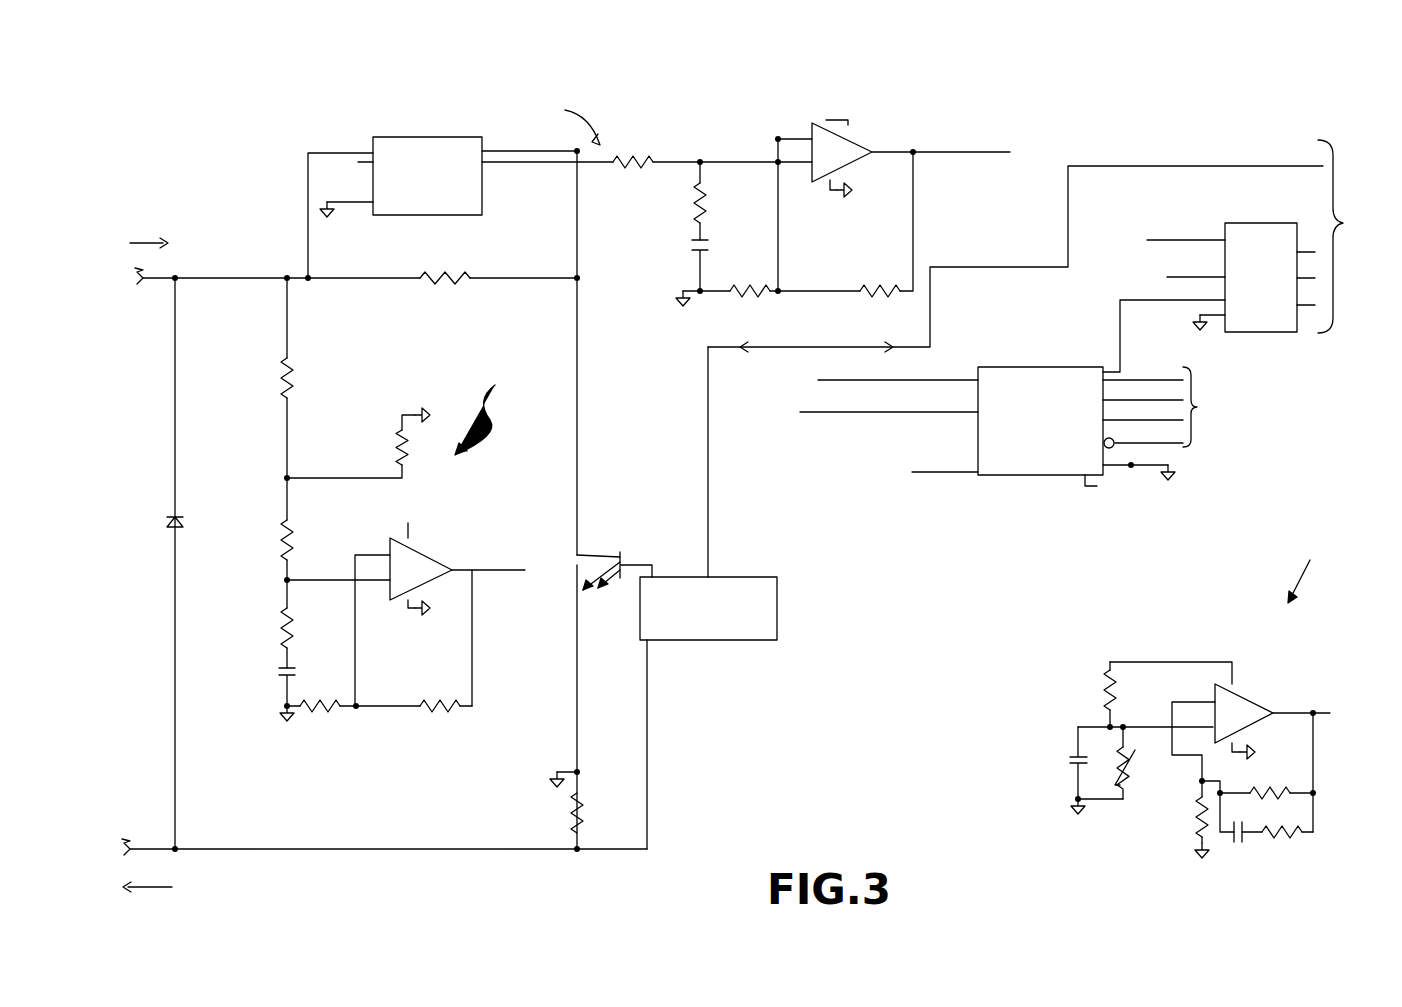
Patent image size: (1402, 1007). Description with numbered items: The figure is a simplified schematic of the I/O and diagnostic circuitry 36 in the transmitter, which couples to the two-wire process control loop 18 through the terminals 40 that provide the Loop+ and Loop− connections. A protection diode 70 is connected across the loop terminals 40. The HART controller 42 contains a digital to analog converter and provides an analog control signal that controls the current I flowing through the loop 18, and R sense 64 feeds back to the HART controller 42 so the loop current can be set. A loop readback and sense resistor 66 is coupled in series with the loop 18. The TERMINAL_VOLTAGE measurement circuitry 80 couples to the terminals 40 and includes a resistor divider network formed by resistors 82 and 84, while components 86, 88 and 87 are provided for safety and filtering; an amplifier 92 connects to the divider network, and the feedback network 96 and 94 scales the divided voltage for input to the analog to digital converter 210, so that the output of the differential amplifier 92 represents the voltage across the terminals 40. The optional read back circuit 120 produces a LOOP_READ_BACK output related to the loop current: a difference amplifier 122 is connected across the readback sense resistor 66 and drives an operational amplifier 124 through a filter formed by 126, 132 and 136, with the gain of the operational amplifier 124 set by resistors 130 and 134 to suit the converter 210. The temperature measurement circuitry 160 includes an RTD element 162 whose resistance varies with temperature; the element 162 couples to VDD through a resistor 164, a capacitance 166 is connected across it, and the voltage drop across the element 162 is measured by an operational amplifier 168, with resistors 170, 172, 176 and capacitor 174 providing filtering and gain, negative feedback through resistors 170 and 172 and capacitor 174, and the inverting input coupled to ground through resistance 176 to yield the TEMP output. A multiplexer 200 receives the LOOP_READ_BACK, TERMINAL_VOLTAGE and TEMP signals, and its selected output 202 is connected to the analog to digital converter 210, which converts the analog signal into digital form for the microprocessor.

The two-wire process control loop 18 is at (150, 280).
The terminal 40 is at (145, 278).
The protection diode 70 is at (171, 518).
The difference amplifier 122 is at (405, 135).
The read back circuit 120 is at (561, 325).
The loop readback and sense resistor 66 is at (453, 270).
The resistor 126 is at (630, 160).
The resistor 132 is at (699, 199).
The capacitor 136 is at (697, 244).
The resistor 134 is at (743, 297).
The resistor 130 is at (870, 286).
The operational amplifier 124 is at (840, 145).
The circuitry 36 is at (1221, 156).
The analog to digital converter 210 is at (1250, 332).
The output 202 is at (1118, 330).
The multiplexer 200 is at (1065, 368).
The TERMINAL_VOLTAGE measurement circuitry 80 is at (482, 406).
The resistor 82 is at (292, 366).
The resistor 84 is at (398, 445).
The component 86 is at (285, 523).
The amplifier 92 is at (420, 548).
The component 88 is at (240, 627).
The component 87 is at (282, 672).
The feedback network resistor 94 is at (315, 710).
The feedback network resistor 96 is at (442, 699).
The HART controller 42 is at (712, 642).
The R sense 64 is at (584, 821).
The temperature measurement circuitry 160 is at (1228, 609).
The resistor 164 is at (1106, 685).
The capacitance 166 is at (1075, 763).
The RTD element 162 is at (1133, 757).
The operational amplifier 168 is at (1238, 694).
The resistor 170 is at (1275, 790).
The resistor 172 is at (1275, 835).
The capacitor 174 is at (1243, 845).
The resistance 176 is at (1198, 823).